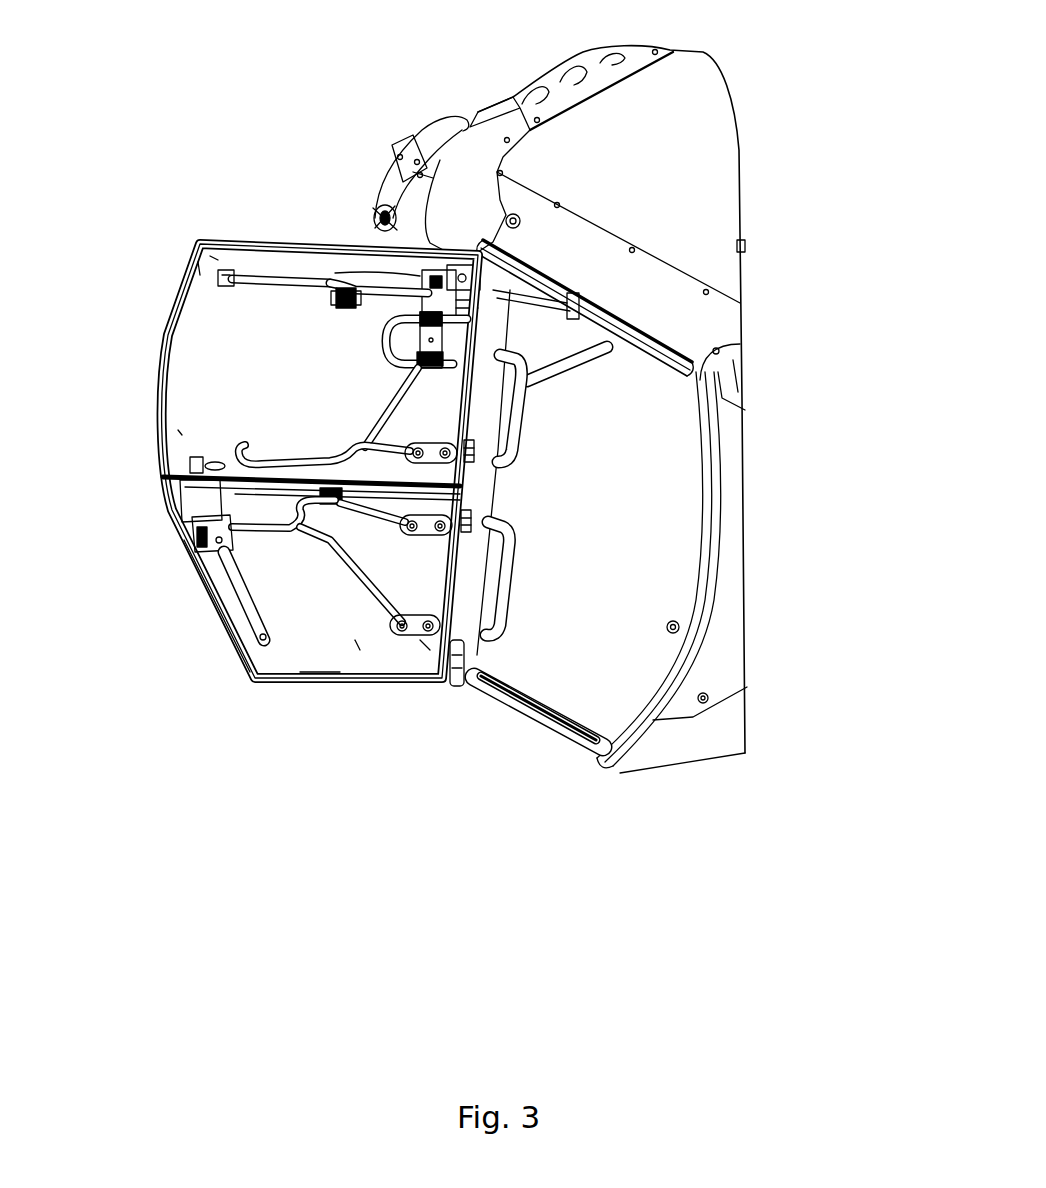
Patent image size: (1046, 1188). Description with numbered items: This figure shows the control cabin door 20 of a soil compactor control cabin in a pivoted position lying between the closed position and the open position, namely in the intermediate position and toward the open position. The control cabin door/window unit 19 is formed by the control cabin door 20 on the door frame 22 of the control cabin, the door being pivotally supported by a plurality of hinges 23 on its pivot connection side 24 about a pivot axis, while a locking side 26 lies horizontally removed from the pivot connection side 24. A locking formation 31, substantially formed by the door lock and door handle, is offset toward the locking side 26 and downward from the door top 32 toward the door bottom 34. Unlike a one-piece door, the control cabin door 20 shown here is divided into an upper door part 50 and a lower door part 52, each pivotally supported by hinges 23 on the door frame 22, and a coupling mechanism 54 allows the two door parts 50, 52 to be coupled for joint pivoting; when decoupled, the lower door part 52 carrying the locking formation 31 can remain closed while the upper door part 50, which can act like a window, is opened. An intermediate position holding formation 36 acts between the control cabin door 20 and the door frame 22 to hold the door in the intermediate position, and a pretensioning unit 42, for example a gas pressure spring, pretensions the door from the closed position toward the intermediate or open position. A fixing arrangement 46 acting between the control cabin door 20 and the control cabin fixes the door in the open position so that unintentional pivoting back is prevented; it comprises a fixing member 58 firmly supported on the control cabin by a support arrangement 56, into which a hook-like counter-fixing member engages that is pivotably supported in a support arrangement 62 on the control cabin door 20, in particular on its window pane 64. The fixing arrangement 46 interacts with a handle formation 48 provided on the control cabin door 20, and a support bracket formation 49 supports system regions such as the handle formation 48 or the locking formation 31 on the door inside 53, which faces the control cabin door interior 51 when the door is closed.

The control cabin door/window unit 19 is at (270, 470).
The control cabin door 20 is at (160, 365).
The door frame 22 is at (700, 572).
The hinges 23 is at (457, 663).
The pivot connection side 24 is at (430, 653).
The locking side 26 is at (180, 417).
The locking formation 31 is at (195, 578).
The door top 32 is at (243, 265).
The door bottom 34 is at (307, 670).
The intermediate position holding formation 36 is at (497, 270).
The pretensioning unit 42 is at (573, 294).
The fixing arrangement 46 is at (337, 270).
The handle formation 48 is at (380, 372).
The support bracket formation 49 is at (440, 426).
The upper door part 50 is at (180, 314).
The control cabin door interior 51 is at (653, 657).
The lower door part 52 is at (240, 625).
The door inside 53 is at (360, 652).
The coupling mechanism 54 is at (165, 478).
The support arrangement 56 is at (410, 138).
The fixing member 58 is at (368, 205).
The support arrangement 62 is at (350, 302).
The window pane 64 is at (205, 292).